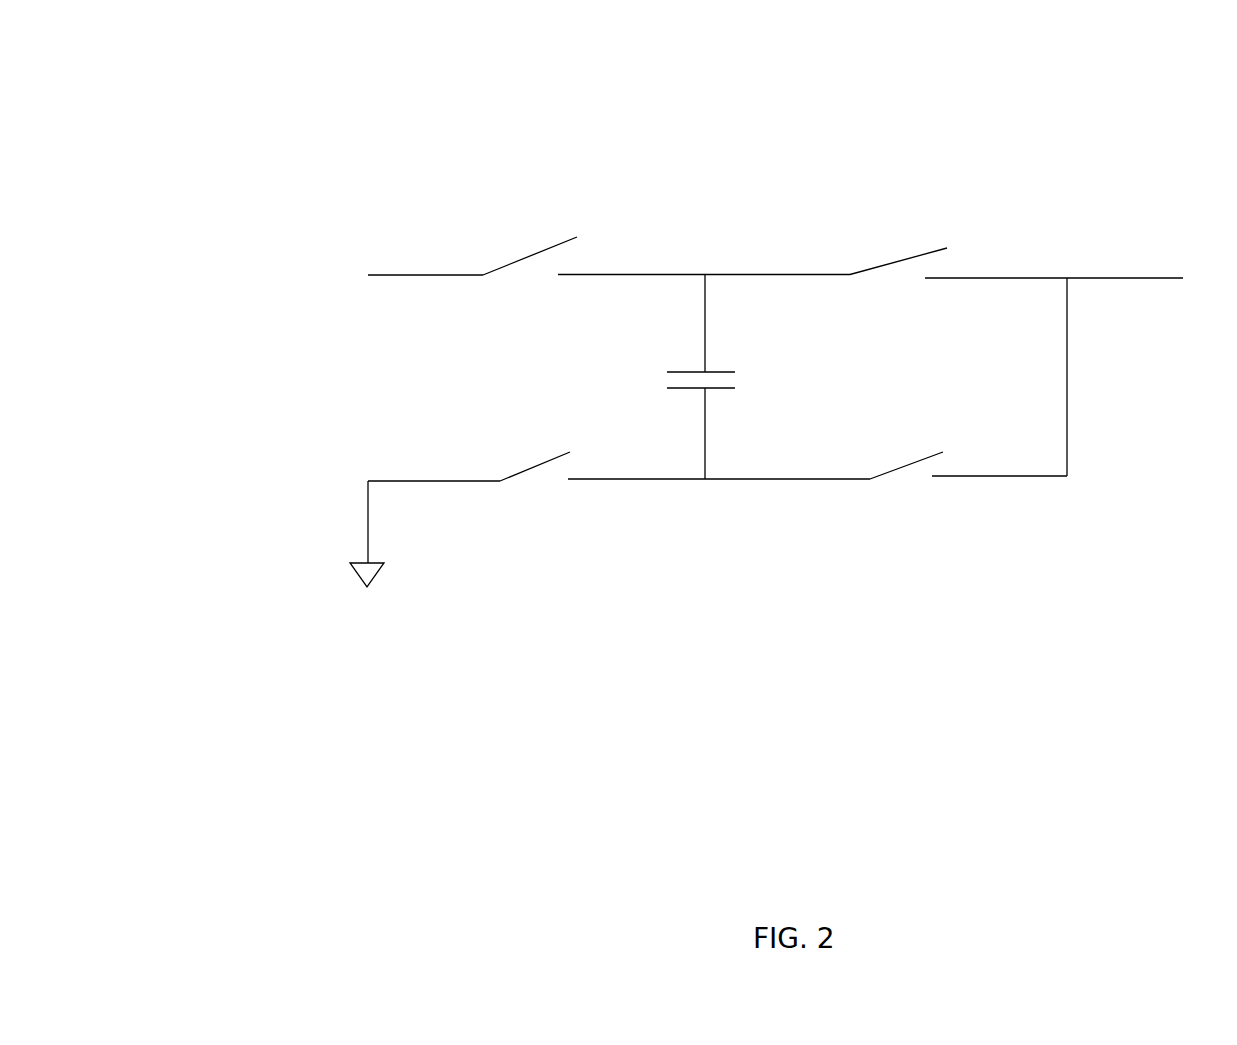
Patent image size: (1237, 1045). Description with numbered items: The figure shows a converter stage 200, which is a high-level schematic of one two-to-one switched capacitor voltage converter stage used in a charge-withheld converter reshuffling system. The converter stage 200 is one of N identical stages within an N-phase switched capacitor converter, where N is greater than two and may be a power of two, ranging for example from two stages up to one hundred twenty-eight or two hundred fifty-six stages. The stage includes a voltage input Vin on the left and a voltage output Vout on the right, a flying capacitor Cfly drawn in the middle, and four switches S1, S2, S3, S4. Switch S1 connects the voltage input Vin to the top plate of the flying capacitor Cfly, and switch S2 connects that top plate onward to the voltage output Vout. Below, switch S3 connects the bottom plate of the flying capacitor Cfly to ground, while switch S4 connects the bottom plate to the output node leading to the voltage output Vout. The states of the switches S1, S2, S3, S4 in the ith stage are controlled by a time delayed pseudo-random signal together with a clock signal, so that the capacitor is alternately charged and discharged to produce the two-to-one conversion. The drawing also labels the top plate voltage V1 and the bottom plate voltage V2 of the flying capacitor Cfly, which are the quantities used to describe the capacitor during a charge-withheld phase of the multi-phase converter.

The converter stage 200 is at (243, 97).
The switch S1,i S1 is at (587, 252).
The switch S2,i S2 is at (886, 254).
The switch S3,i S3 is at (536, 486).
The switch S4,i S4 is at (886, 486).
The flying capacitor Cfly is at (712, 377).
The voltage input Vin is at (400, 281).
The voltage output Vout is at (1151, 371).
The top plate voltage V1(t) V1 is at (691, 324).
The bottom plate voltage V2(t) V2 is at (691, 433).